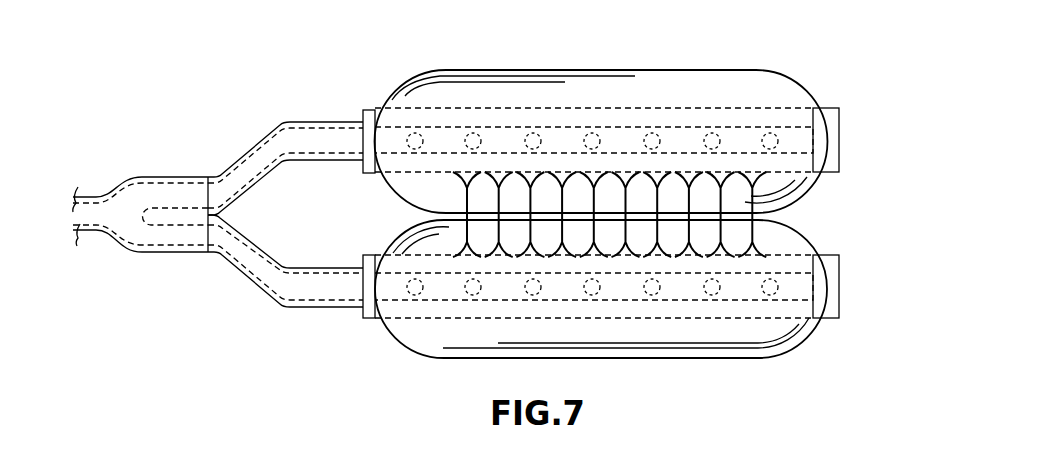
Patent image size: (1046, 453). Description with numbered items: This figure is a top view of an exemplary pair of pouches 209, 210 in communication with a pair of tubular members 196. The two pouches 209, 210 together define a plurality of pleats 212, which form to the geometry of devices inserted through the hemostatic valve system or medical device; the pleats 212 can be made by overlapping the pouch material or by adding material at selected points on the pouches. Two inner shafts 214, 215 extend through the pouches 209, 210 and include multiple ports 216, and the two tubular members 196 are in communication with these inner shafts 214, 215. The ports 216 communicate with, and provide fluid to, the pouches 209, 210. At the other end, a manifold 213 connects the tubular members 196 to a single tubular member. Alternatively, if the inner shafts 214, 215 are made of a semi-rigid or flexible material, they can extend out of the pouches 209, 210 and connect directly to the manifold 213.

The tubular members 196 is at (256, 126).
The pouch 209 is at (715, 77).
The pouch 210 is at (405, 335).
The pleats 212 is at (755, 212).
The manifold 213 is at (135, 177).
The inner shaft 214 is at (843, 140).
The inner shaft 215 is at (841, 288).
The ports 216 is at (707, 294).